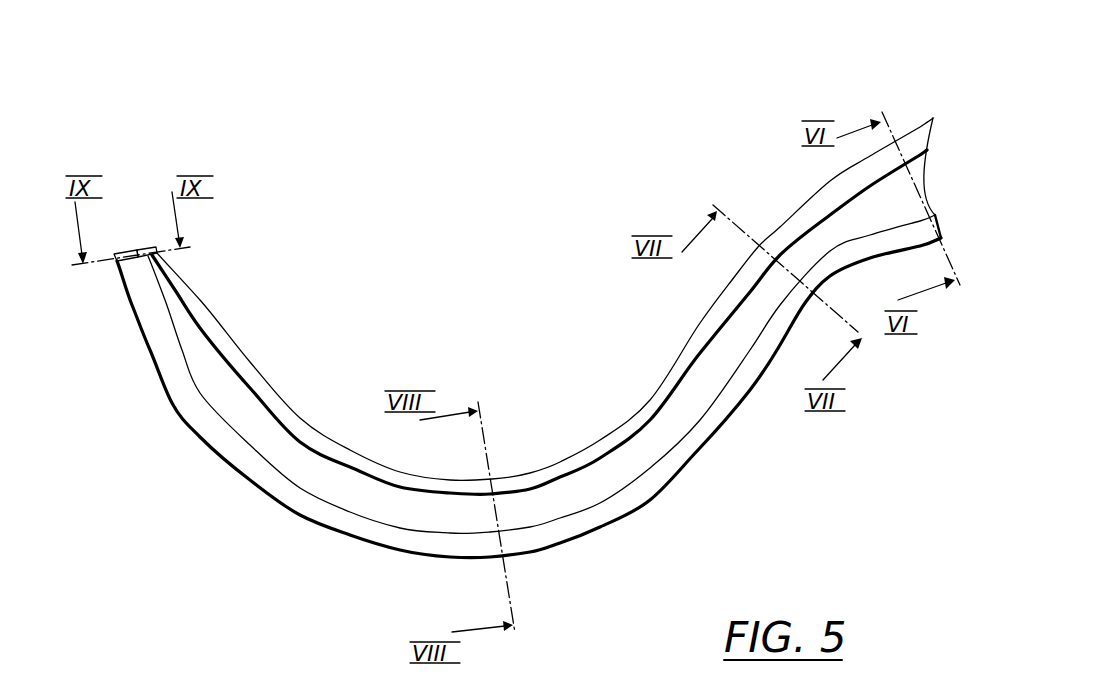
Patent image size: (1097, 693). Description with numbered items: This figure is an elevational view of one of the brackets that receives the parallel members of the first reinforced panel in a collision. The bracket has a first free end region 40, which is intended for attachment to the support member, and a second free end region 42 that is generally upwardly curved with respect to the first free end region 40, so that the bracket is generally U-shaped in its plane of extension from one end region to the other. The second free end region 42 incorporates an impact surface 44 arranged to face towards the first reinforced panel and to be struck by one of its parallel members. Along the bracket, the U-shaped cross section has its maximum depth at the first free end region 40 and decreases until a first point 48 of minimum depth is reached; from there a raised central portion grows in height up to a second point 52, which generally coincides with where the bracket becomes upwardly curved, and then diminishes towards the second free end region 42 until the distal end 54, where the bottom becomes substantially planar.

The first free end region 40 is at (533, 310).
The second free end region 42 is at (130, 266).
The impact surface 44 is at (172, 403).
The first point 48 is at (757, 257).
The second point 52 is at (493, 477).
The distal end 54 is at (143, 248).